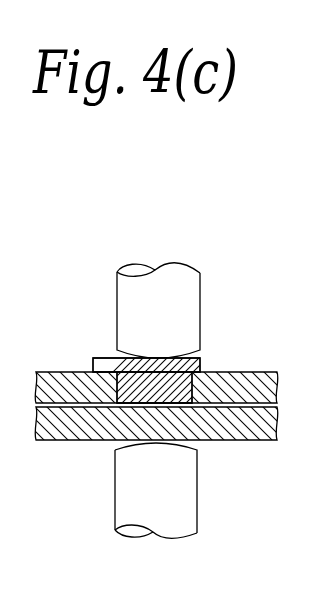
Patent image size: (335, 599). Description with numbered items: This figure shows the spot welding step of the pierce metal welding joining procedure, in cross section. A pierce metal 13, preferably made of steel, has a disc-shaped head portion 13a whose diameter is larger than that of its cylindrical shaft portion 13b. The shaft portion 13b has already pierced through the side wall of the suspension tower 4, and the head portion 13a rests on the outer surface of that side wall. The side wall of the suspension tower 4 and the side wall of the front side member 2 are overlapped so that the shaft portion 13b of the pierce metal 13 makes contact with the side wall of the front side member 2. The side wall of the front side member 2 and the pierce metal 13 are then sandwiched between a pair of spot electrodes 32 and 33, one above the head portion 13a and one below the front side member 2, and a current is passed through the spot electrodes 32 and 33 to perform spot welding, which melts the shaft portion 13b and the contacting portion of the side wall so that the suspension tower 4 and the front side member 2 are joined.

The suspension tower 4 is at (61, 386).
The front side member 2 is at (54, 425).
The pierce metal 13 is at (290, 306).
The head portion 13a is at (200, 363).
The shaft portion 13b is at (197, 388).
The spot electrode 32 is at (199, 281).
The spot electrode 33 is at (190, 500).